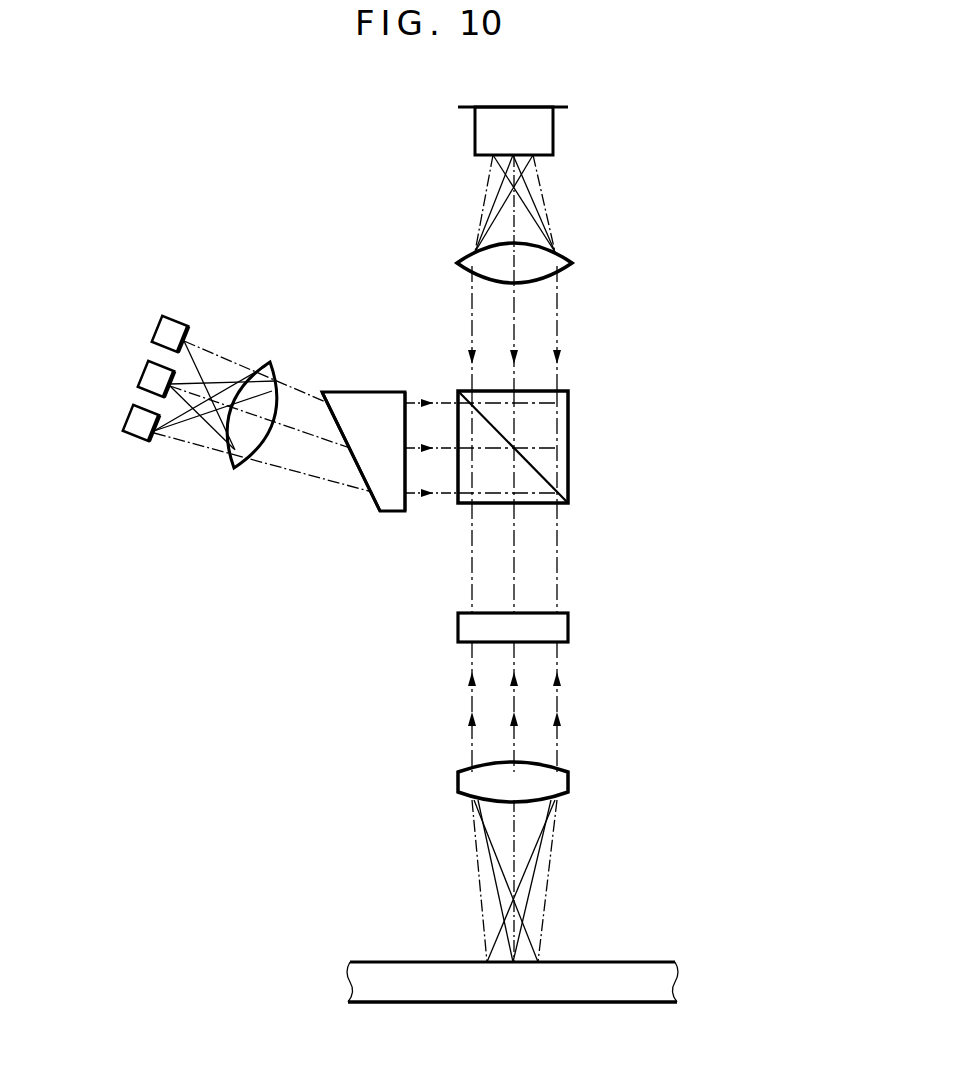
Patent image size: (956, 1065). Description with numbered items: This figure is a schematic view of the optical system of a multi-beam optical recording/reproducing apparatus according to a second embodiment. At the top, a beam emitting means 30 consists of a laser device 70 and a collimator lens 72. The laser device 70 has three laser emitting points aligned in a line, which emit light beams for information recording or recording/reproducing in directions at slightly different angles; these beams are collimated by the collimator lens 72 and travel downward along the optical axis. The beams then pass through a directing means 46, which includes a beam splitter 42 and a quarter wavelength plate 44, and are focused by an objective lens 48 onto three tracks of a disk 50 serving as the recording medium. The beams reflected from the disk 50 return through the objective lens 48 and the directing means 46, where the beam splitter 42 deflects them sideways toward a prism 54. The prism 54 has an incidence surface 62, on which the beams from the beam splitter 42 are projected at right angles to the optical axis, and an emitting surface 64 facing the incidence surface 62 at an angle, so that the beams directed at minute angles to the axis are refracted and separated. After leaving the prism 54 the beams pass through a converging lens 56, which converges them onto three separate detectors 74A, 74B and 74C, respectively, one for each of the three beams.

The laser device 70 is at (553, 135).
The collimator lens 72 is at (572, 263).
The beam emitting means 30 is at (460, 208).
The beam splitter 42 is at (568, 457).
The quarter wavelength plate 44 is at (568, 624).
The directing means 46 is at (582, 540).
The objective lens 48 is at (568, 780).
The disk 50 is at (644, 962).
The prism 54 is at (358, 397).
The incidence surface 62 is at (406, 484).
The emitting surface 64 is at (361, 478).
The converging lens 56 is at (235, 469).
The detector 74A is at (141, 377).
The detector 74B is at (128, 420).
The detector 74C is at (154, 327).